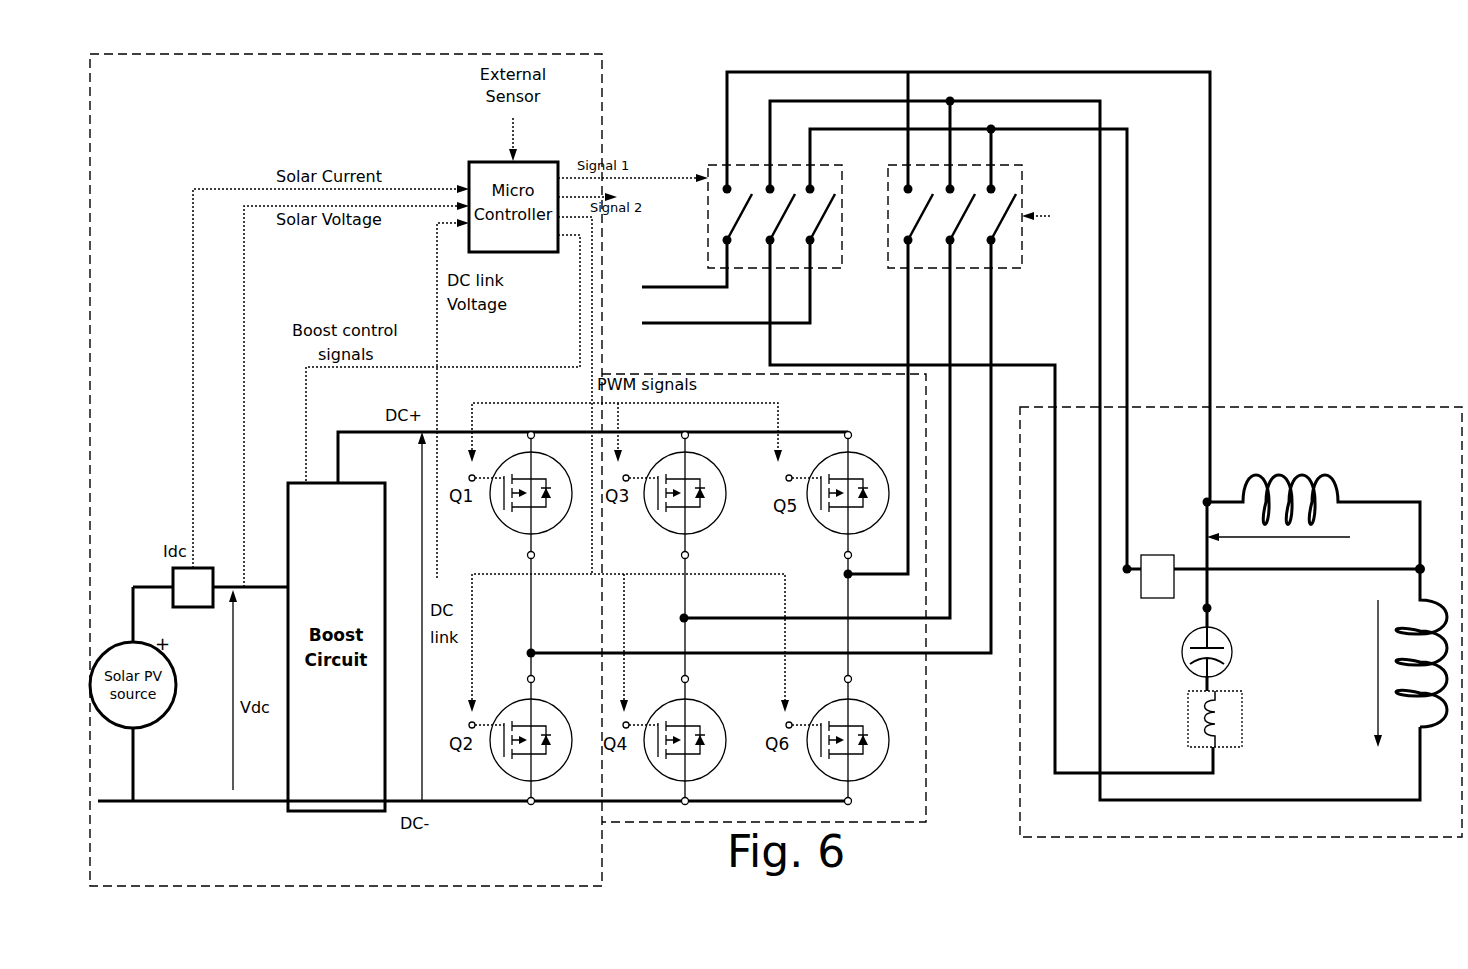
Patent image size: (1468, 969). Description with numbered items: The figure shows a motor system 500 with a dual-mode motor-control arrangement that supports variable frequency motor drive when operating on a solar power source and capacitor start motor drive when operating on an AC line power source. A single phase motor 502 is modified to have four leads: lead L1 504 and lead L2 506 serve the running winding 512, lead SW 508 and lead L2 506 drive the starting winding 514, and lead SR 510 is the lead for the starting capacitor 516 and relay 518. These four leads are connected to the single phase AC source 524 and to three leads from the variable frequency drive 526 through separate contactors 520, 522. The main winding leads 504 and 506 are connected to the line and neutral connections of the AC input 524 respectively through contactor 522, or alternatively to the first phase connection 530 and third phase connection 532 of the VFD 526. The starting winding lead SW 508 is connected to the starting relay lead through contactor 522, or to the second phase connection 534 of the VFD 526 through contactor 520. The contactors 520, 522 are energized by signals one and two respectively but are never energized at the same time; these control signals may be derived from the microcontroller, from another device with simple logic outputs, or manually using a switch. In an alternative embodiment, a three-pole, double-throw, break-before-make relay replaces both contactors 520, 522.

The motor system 500 is at (1336, 74).
The single phase motor 502 is at (1241, 622).
The L1 lead 504 is at (1210, 277).
The L2 lead 506 is at (1127, 315).
The SW lead 508 is at (1100, 377).
The SR lead 510 is at (1055, 418).
The running winding 512 is at (1318, 480).
The starting winding 514 is at (1398, 645).
The starting capacitor 516 is at (1203, 651).
The relay 518 is at (1197, 698).
The contactor 520 is at (1016, 216).
The contactor 522 is at (720, 181).
The single phase AC source 524 is at (726, 298).
The variable frequency drive 526 is at (346, 470).
The PH1 connection 530 is at (848, 657).
The PH3 connection 532 is at (898, 575).
The Ph2 connection 534 is at (878, 620).